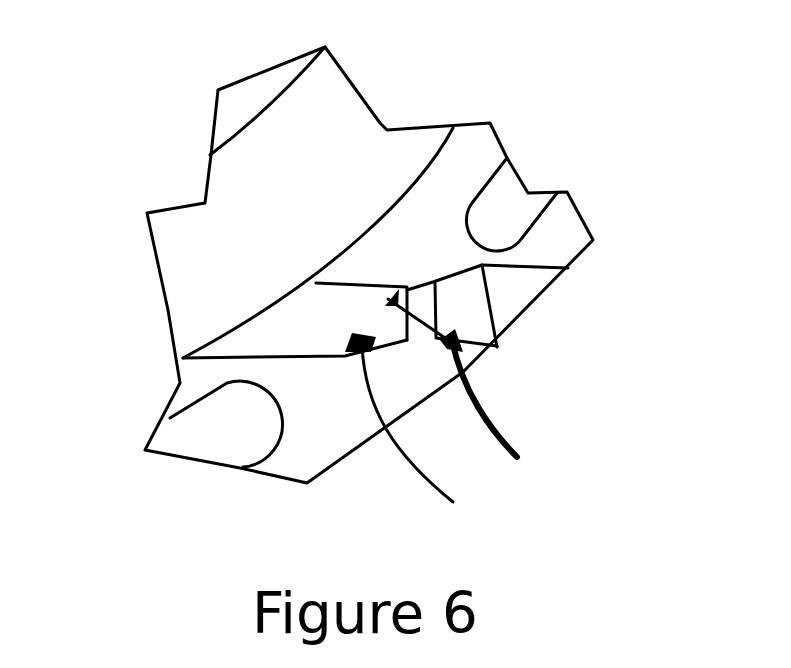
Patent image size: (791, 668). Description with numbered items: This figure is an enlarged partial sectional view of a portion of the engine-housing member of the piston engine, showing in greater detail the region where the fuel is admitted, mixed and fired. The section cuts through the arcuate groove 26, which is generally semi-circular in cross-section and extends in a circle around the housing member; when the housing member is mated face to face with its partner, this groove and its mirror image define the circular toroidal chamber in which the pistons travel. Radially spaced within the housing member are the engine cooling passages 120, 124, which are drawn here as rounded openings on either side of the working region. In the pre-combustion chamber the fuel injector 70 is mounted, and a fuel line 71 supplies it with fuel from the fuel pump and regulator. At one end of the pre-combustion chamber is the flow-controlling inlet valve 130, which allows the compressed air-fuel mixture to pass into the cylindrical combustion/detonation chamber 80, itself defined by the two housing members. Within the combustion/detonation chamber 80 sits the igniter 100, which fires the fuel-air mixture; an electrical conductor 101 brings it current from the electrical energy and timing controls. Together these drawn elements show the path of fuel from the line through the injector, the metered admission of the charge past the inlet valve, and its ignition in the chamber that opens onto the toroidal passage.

The arcuate groove 26 is at (312, 127).
The inlet valve 130 is at (392, 326).
The igniter 100 is at (350, 342).
The engine cooling passage 120 is at (205, 430).
The engine cooling passage 124 is at (502, 222).
The fuel injector 70 is at (497, 346).
The fuel line 71 is at (503, 458).
The combustion/detonation chamber 80 is at (517, 292).
The electrical conductor 101 is at (404, 475).